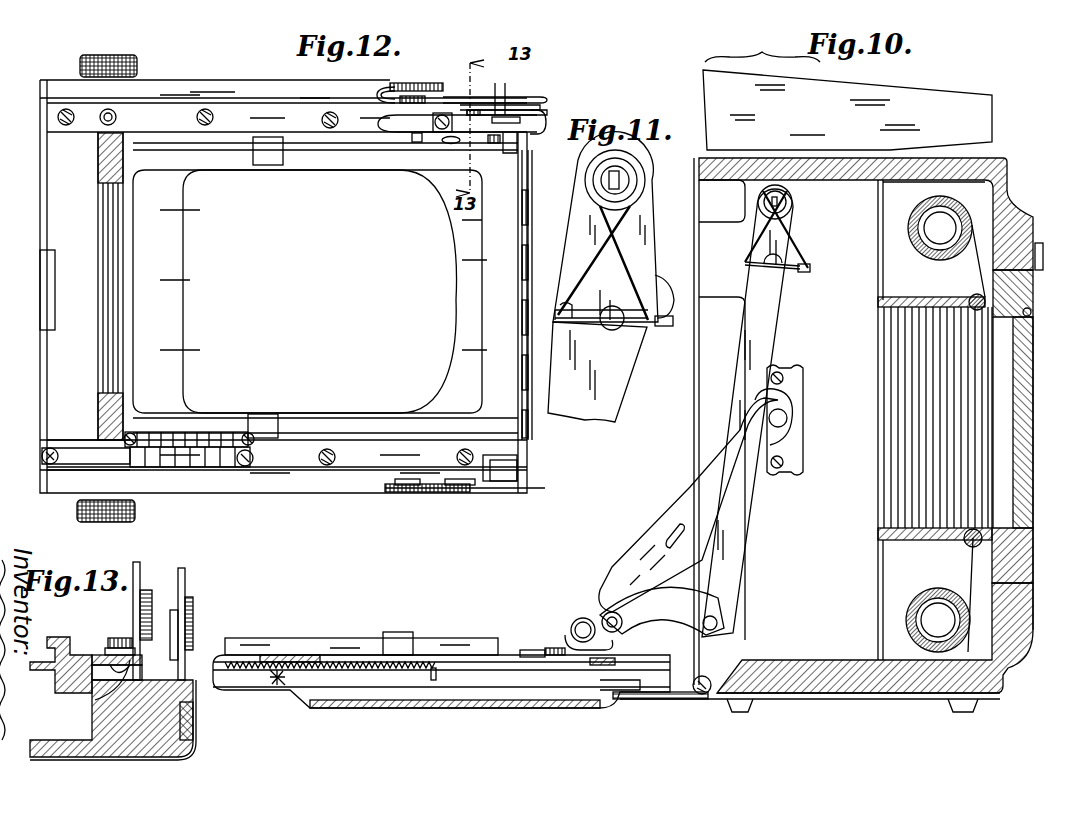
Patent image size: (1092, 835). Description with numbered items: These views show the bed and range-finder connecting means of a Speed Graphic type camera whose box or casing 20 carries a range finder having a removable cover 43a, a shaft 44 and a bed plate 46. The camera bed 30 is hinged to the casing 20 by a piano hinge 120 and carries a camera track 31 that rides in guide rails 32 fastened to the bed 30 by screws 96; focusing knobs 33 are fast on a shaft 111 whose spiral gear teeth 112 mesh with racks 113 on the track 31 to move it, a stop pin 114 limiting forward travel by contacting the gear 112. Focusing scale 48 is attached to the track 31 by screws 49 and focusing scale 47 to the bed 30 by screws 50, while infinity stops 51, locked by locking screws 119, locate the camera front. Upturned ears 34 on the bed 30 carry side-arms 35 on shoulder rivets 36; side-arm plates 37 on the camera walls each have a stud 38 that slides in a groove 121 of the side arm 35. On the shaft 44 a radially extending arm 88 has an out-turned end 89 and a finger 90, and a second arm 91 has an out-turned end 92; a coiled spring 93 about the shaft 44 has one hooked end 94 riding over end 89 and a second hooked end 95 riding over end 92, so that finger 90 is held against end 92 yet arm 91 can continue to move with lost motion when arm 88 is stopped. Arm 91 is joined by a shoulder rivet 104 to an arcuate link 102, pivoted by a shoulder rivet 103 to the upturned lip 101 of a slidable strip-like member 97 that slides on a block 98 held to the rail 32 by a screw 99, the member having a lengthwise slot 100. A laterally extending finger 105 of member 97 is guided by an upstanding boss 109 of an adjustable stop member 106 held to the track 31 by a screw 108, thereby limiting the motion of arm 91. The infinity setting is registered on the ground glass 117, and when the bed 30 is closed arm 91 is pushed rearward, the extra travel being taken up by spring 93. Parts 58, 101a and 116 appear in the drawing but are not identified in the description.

In FIG. 10, the camera box or casing 20 is at (830, 665).
In FIG. 12, the camera bed 30 is at (55, 170).
In FIG. 10, the camera bed 30 is at (325, 700).
In FIG. 12, the camera track 31 is at (183, 290).
In FIG. 10, the camera track 31 is at (325, 638).
In FIG. 13, the camera track 31 is at (45, 672).
In FIG. 12, the guide rails 32 is at (248, 100).
In FIG. 10, the guide rails 32 is at (222, 662).
In FIG. 13, the guide rails 32 is at (112, 700).
In FIG. 12, the focusing knobs 33 is at (112, 55).
In FIG. 12, the upturned ears 34 is at (412, 83).
In FIG. 10, the upturned ears 34 is at (552, 647).
In FIG. 13, the upturned ears 34 is at (193, 607).
In FIG. 12, the side-arms 35 is at (547, 99).
In FIG. 10, the side-arms 35 is at (665, 540).
In FIG. 13, the side-arms 35 is at (185, 578).
In FIG. 12, the shoulder rivets 36 is at (385, 87).
In FIG. 10, the shoulder rivets 36 is at (580, 618).
In FIG. 10, the side-arm plates 37 is at (803, 455).
In FIG. 10, the stud 38 is at (787, 419).
In FIG. 10, the removable cover 43a is at (992, 120).
In FIG. 11, the shaft 44 is at (628, 167).
In FIG. 10, the shaft 44 is at (793, 202).
In FIG. 10, the range finder bed plate 46 is at (762, 48).
In FIG. 12, the focusing scale 47 is at (163, 432).
In FIG. 12, the focusing scale 48 is at (70, 470).
In FIG. 12, the screws 49 is at (134, 433).
In FIG. 12, the screws 50 is at (54, 449).
In FIG. 12, the infinity stops 51 is at (272, 165).
In FIG. 10, the infinity stops 51 is at (398, 632).
In FIG. 10, the housing block 58 is at (1022, 552).
In FIG. 11, the radially extending arm 88 is at (576, 218).
In FIG. 10, the radially extending arm 88 is at (757, 213).
In FIG. 11, the out-turned end 89 is at (578, 308).
In FIG. 11, the extending arm 90 is at (618, 330).
In FIG. 10, the extending arm 90 is at (780, 270).
In FIG. 11, the second arm 91 is at (610, 405).
In FIG. 10, the second arm 91 is at (768, 326).
In FIG. 11, the out-turned end 92 is at (655, 285).
In FIG. 10, the out-turned end 92 is at (800, 262).
In FIG. 11, the coiled spring 93 is at (628, 240).
In FIG. 10, the coiled spring 93 is at (785, 240).
In FIG. 11, the hooked end 94 is at (557, 312).
In FIG. 11, the second hooked end 95 is at (668, 328).
In FIG. 10, the second hooked end 95 is at (808, 272).
In FIG. 12, the screws 96 is at (66, 109).
In FIG. 12, the slidable strip-like member 97 is at (546, 130).
In FIG. 12, the block 98 is at (445, 113).
In FIG. 12, the screw 99 is at (446, 144).
In FIG. 13, the screw 99 is at (108, 642).
In FIG. 12, the lengthwise extending slot 100 is at (390, 124).
In FIG. 12, the upturned lip 101 is at (478, 108).
In FIG. 10, the upturned lip 101 is at (630, 699).
In FIG. 13, the upturned lip 101 is at (140, 615).
In FIG. 13, the base plate flange 101a is at (110, 690).
In FIG. 12, the arcuate link 102 is at (525, 115).
In FIG. 10, the arcuate link 102 is at (690, 600).
In FIG. 13, the arcuate link 102 is at (133, 590).
In FIG. 10, the shoulder rivet 103 is at (604, 612).
In FIG. 13, the shoulder rivet 103 is at (172, 612).
In FIG. 10, the shoulder rivet 104 is at (718, 622).
In FIG. 12, the laterally extending finger 105 is at (512, 153).
In FIG. 12, the adjustable stop member 106 is at (492, 144).
In FIG. 10, the adjustable stop member 106 is at (525, 648).
In FIG. 12, the screw 108 is at (440, 132).
In FIG. 12, the upstanding boss 109 is at (415, 142).
In FIG. 10, the upstanding boss 109 is at (560, 648).
In FIG. 12, the shaft 111 is at (103, 188).
In FIG. 12, the spiral gear teeth 112 is at (98, 142).
In FIG. 10, the spiral gear teeth 112 is at (272, 684).
In FIG. 10, the racks 113 is at (372, 672).
In FIG. 10, the stop pin 114 is at (433, 682).
In FIG. 12, the frame bar 116 is at (165, 92).
In FIG. 10, the frame bar 116 is at (548, 680).
In FIG. 13, the frame bar 116 is at (190, 728).
In FIG. 10, the ground glass 117 is at (1020, 399).
In FIG. 12, the locking screws 119 is at (283, 130).
In FIG. 10, the piano hinge 120 is at (700, 695).
In FIG. 10, the groove 121 is at (676, 520).